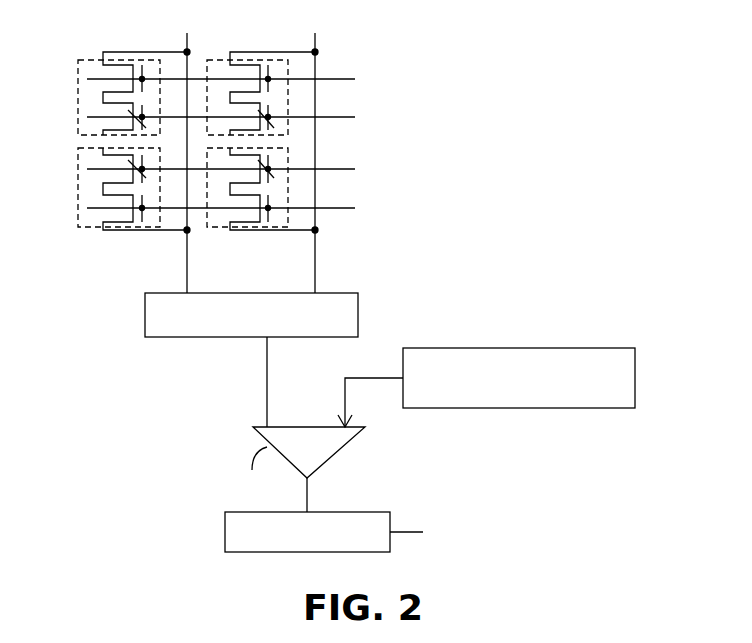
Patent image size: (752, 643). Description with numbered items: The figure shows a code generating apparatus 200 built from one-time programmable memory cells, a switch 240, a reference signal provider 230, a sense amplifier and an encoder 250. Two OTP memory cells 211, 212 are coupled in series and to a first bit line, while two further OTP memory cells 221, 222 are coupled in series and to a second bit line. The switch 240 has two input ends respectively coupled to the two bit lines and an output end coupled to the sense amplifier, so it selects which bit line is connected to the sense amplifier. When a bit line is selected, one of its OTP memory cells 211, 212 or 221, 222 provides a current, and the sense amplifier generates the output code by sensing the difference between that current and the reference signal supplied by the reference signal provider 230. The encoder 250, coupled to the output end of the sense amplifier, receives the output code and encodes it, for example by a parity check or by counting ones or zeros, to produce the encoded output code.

The code generating apparatus 200 is at (380, 277).
The OTP memory cell 211 is at (87, 58).
The OTP memory cell 212 is at (85, 228).
The OTP memory cell 221 is at (258, 59).
The OTP memory cell 222 is at (212, 228).
The reference signal provider 230 is at (529, 348).
The switch 240 is at (347, 293).
The encoder 250 is at (370, 512).